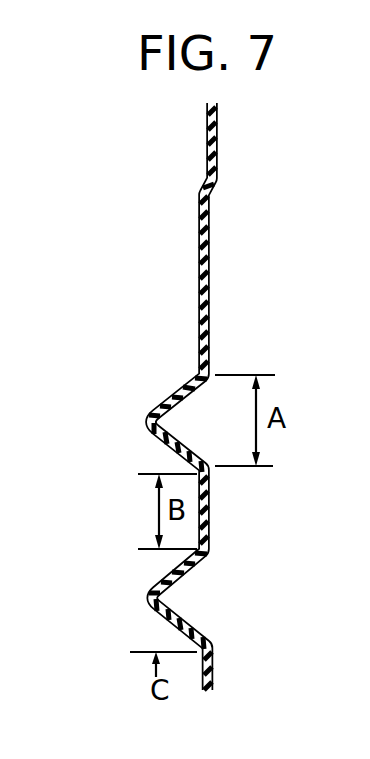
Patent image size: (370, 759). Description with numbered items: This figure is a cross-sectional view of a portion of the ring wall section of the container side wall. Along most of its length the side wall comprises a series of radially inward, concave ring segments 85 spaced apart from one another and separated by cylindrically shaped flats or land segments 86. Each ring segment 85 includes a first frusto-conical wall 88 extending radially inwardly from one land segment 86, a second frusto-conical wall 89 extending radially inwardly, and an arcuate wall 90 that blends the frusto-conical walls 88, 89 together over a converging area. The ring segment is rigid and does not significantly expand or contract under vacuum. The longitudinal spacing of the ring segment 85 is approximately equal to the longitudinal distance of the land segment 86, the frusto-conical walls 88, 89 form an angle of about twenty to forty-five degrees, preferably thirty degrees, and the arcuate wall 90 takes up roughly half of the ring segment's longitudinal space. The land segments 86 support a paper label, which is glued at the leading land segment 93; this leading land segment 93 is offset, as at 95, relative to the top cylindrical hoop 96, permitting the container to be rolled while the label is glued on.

The ring segment 85 is at (129, 405).
The land segment 86 is at (210, 510).
The first frusto-conical wall 88 is at (187, 566).
The second frusto-conical wall 89 is at (176, 612).
The arcuate wall 90 is at (145, 593).
The leading land segment 93 is at (210, 260).
The offset 95 is at (211, 189).
The top cylindrical hoop 96 is at (218, 147).